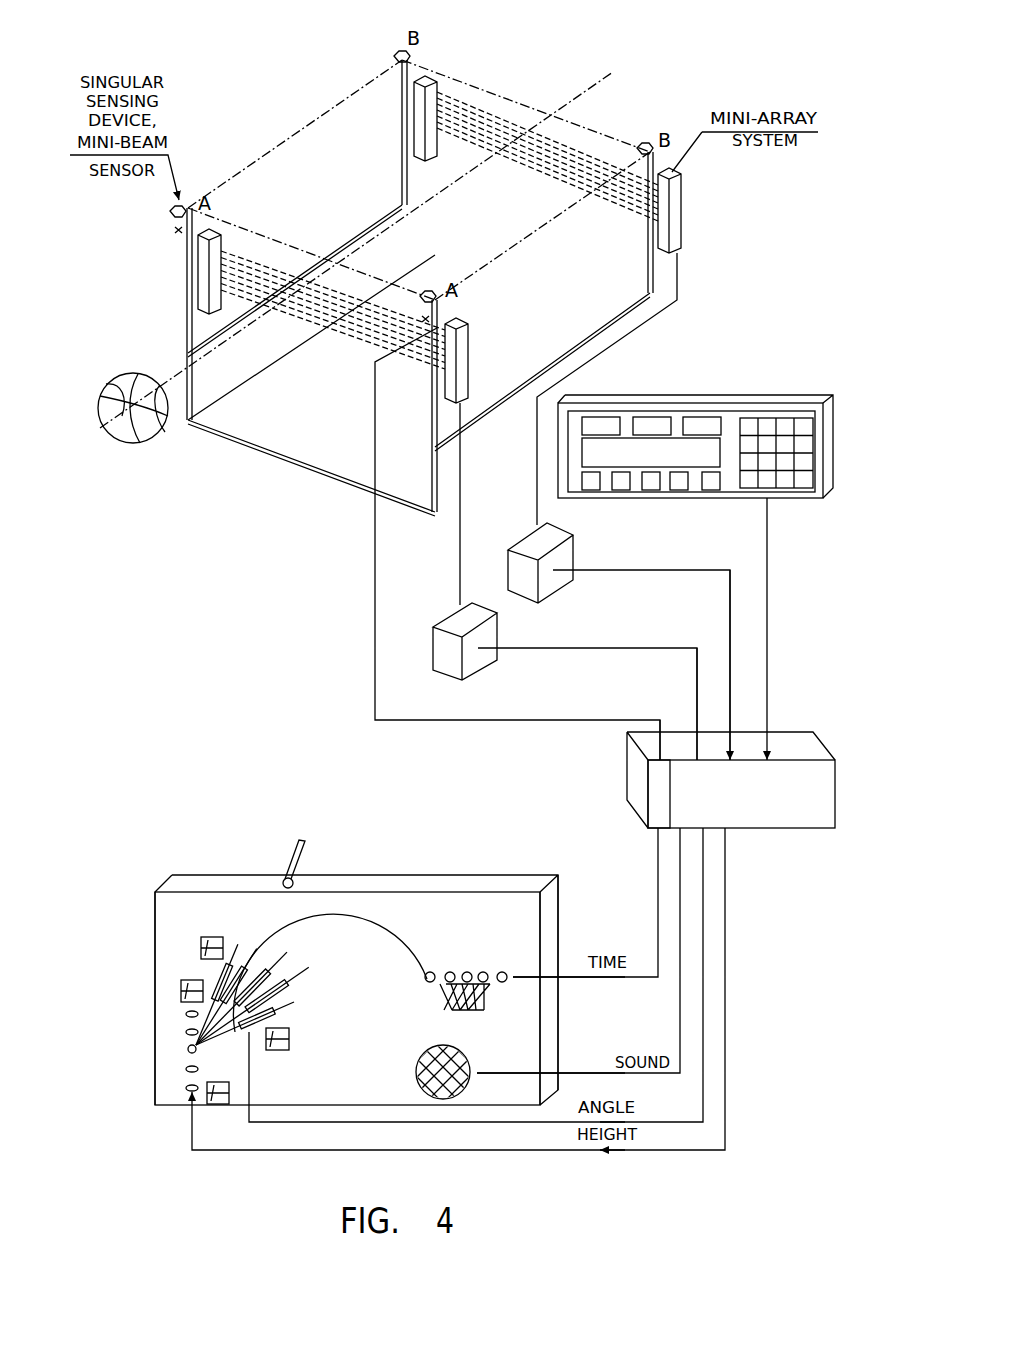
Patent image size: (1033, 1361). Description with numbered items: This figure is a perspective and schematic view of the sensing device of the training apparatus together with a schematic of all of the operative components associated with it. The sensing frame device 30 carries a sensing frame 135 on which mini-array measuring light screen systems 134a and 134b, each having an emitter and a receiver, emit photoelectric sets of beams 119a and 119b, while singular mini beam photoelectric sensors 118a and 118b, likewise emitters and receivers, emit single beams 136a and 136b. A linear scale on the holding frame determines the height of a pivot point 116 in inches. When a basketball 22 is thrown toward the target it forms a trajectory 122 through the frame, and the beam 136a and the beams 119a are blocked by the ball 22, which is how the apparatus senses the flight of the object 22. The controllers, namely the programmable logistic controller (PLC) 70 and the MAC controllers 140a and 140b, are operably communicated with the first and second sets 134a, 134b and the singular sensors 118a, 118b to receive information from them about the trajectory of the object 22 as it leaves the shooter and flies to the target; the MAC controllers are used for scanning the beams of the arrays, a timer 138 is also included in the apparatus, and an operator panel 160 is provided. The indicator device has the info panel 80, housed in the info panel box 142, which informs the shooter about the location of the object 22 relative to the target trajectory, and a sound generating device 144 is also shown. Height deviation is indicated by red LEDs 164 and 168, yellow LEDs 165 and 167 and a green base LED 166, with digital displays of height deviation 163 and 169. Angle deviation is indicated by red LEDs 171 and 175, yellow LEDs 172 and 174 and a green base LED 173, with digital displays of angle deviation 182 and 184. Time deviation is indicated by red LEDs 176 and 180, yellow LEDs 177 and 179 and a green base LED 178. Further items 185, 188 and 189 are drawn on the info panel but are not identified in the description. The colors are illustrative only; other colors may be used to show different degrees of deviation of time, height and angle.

The basketball 22 is at (128, 446).
The sensing frame device 30 is at (252, 463).
The programmable logistic controller (PLC) 70 is at (807, 840).
The info panel 80 is at (318, 1157).
The pivot point 116 is at (178, 230).
The mini beam photoelectric sensor 118a is at (168, 207).
The mini beam photoelectric sensor 118b is at (392, 56).
The photoelectric set of beams 119a is at (330, 337).
The photoelectric set of beams 119b is at (562, 182).
The trajectory 122 is at (573, 100).
The mini-array measuring light screen system 134a is at (193, 276).
The mini-array measuring light screen system 134b is at (411, 118).
The sensing frame 135 is at (350, 232).
The single beam 136a is at (268, 246).
The single beam 136b is at (527, 110).
The timer 138 is at (645, 765).
The controller MAC 1a 140a is at (435, 627).
The controller MAC 1b 140b is at (512, 548).
The box of info panel 142 is at (548, 1100).
The sound generating device 144 is at (450, 1093).
The operator panel 160 is at (778, 383).
The digital display of height deviation 163 is at (186, 946).
The red LED deviation of height 164 is at (183, 988).
The yellow LED deviation of height 165 is at (186, 1017).
The green LED height base 166 is at (188, 1049).
The yellow LED deviation of height 167 is at (186, 1071).
The red LED deviation of height 168 is at (190, 1094).
The digital display of height deviation 169 is at (218, 1103).
The red LED deviation of angle 171 is at (222, 975).
The yellow LED deviation of angle 172 is at (250, 975).
The green LED angle base 173 is at (283, 961).
The yellow LED deviation of angle 174 is at (310, 970).
The red LED deviation of angle 175 is at (294, 1002).
The red LED deviation of time 176 is at (508, 977).
The yellow LED deviation of time 177 is at (484, 972).
The green LED time base 178 is at (467, 972).
The yellow LED deviation of time 179 is at (450, 972).
The red LED deviation of time 180 is at (428, 972).
The digital display of angle deviation 182 is at (220, 940).
The digital display of angle deviation 184 is at (293, 1043).
The toggle switch 185 is at (298, 834).
The indicator arc 188 is at (368, 912).
The net indicator 189 is at (483, 1003).